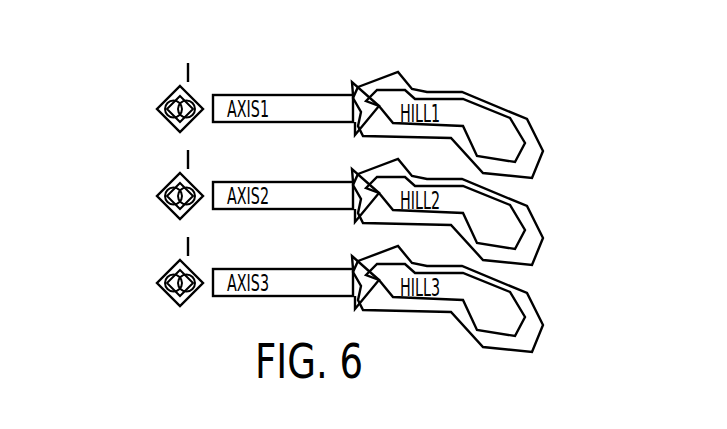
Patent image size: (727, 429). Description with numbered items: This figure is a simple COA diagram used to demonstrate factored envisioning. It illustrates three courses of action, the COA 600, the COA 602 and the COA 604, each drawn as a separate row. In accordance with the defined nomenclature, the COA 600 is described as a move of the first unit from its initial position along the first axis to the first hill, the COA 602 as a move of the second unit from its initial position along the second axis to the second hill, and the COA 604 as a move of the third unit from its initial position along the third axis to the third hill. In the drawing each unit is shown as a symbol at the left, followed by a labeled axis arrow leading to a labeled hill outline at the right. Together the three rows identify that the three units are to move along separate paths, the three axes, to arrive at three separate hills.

The COA 600 is at (122, 93).
The COA 602 is at (126, 184).
The COA 604 is at (126, 271).